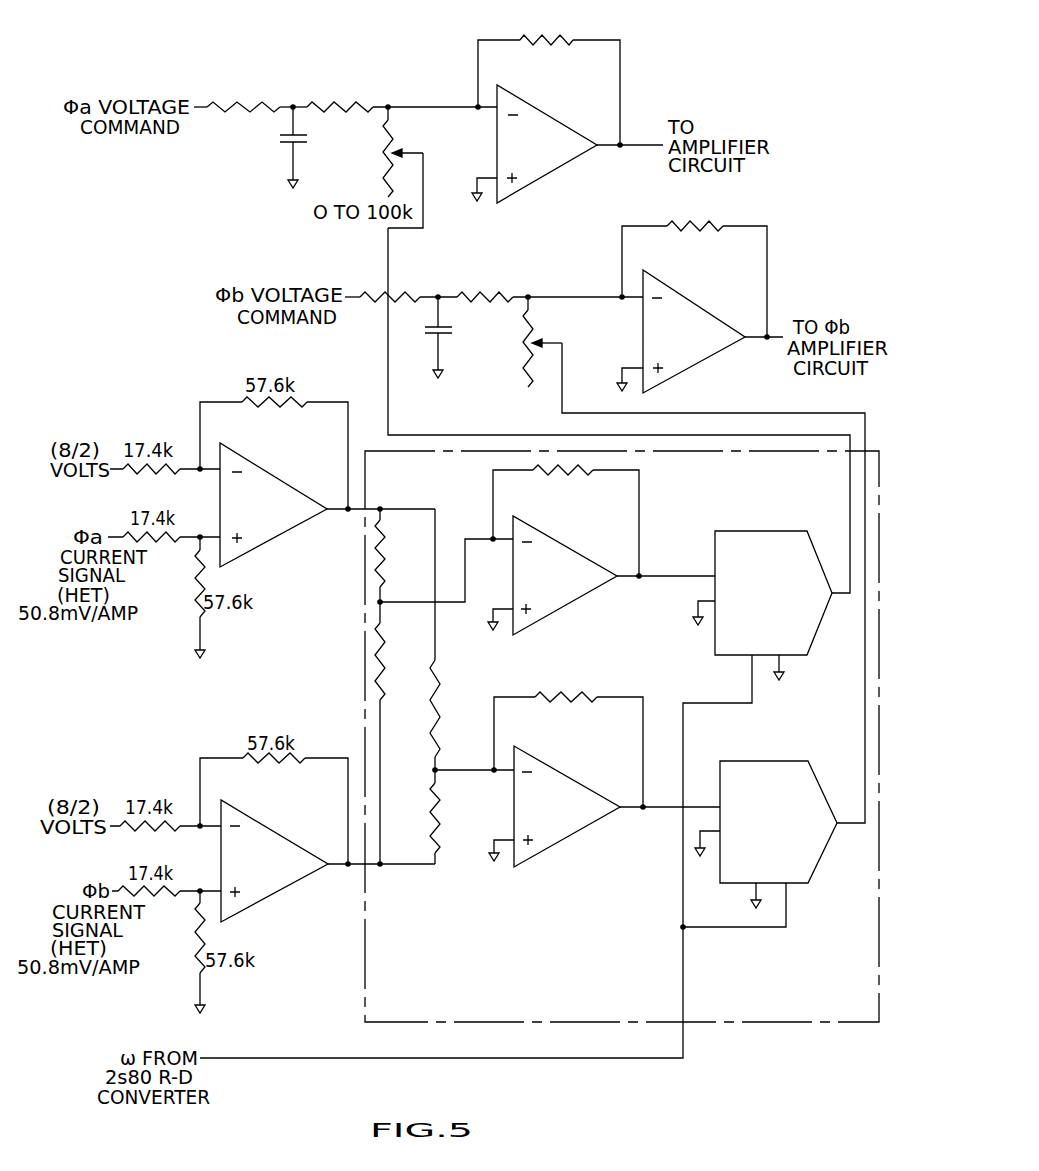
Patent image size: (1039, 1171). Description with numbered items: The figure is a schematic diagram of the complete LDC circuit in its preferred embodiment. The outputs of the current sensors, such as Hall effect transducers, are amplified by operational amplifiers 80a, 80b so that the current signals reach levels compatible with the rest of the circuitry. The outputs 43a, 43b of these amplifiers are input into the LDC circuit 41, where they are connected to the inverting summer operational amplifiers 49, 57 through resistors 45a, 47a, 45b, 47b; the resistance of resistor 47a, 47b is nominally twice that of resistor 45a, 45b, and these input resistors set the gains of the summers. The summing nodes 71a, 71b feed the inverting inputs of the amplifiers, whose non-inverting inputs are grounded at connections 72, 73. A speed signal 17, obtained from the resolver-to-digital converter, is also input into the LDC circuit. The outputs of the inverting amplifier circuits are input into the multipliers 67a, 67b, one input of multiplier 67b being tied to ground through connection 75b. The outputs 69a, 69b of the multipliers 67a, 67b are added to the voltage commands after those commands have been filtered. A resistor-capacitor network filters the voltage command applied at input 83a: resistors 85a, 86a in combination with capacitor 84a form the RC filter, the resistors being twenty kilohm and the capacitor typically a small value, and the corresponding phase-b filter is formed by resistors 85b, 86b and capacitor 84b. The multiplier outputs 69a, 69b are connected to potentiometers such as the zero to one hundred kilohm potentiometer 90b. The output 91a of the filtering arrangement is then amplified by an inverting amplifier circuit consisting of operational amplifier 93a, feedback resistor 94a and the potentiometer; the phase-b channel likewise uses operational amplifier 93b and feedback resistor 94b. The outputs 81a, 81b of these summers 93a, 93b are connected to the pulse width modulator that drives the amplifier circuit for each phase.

The input 83a is at (204, 108).
The resistor 85a is at (247, 100).
The resistor 86a is at (360, 100).
The capacitor 84a is at (280, 141).
The output of the filtering arrangement 91a is at (450, 106).
The operational amplifier 93a is at (550, 163).
The feedback resistor 94a is at (553, 38).
The output of the summer 81a is at (622, 99).
The resistor 85b is at (405, 290).
The resistor 86b is at (503, 290).
The capacitor 84b is at (425, 328).
The potentiometer 90b is at (522, 345).
The operational amplifier 93b is at (708, 350).
The feedback resistor 94b is at (703, 224).
The output of the summer 81b is at (770, 331).
The output of the multiplier 69a is at (848, 468).
The output of the multiplier 69b is at (843, 395).
The operational amplifier 80a is at (263, 537).
The operational amplifier 80b is at (277, 885).
The output 43a is at (353, 513).
The output 43b is at (357, 883).
The resistor 45a is at (388, 527).
The resistor 45b is at (433, 812).
The resistor 47a is at (391, 671).
The resistor 47b is at (438, 716).
The summing node to amplifier 49 71a is at (473, 538).
The summing node to amplifier 57 71b is at (470, 776).
The ground connection of amplifier 49 72 is at (507, 605).
The ground connection of amplifier 57 73 is at (500, 838).
The inverting summer operational amplifier 49 is at (567, 593).
The operational amplifier 57 is at (567, 825).
The multiplier 67a is at (808, 533).
The multiplier 67b is at (798, 761).
The ground connection to -a input of multiplier 67b 75b is at (697, 832).
The LDC circuit 41 is at (778, 1024).
The signal 17 is at (297, 1056).